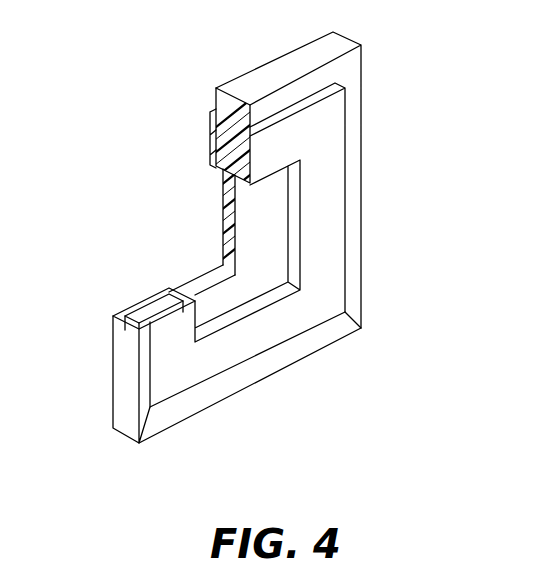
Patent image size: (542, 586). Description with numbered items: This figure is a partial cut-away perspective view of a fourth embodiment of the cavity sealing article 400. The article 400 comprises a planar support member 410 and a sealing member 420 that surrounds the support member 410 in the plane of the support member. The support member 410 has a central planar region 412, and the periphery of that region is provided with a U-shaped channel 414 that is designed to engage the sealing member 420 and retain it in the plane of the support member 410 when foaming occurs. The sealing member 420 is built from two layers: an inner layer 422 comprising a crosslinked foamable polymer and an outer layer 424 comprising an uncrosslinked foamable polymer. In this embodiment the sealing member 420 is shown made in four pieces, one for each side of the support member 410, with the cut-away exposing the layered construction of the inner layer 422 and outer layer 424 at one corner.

The cavity sealing article 400 is at (104, 121).
The planar support member 410 is at (190, 244).
The central planar region 412 is at (245, 210).
The U-shaped channel 414 is at (178, 296).
The sealing member 420 is at (259, 49).
The inner layer 422 is at (212, 138).
The outer layer 424 is at (231, 88).